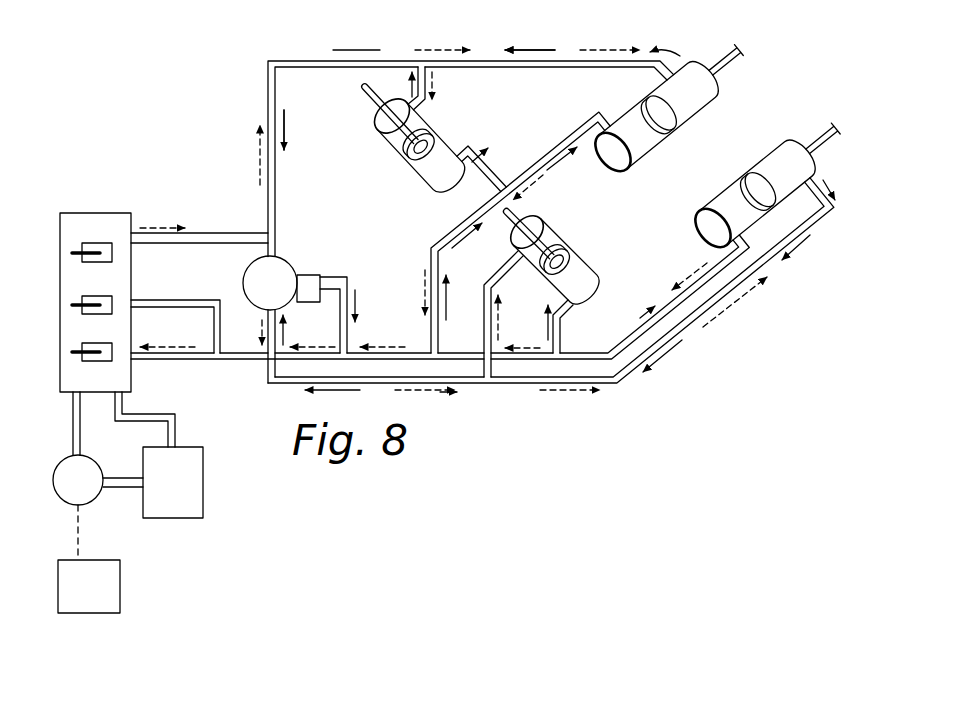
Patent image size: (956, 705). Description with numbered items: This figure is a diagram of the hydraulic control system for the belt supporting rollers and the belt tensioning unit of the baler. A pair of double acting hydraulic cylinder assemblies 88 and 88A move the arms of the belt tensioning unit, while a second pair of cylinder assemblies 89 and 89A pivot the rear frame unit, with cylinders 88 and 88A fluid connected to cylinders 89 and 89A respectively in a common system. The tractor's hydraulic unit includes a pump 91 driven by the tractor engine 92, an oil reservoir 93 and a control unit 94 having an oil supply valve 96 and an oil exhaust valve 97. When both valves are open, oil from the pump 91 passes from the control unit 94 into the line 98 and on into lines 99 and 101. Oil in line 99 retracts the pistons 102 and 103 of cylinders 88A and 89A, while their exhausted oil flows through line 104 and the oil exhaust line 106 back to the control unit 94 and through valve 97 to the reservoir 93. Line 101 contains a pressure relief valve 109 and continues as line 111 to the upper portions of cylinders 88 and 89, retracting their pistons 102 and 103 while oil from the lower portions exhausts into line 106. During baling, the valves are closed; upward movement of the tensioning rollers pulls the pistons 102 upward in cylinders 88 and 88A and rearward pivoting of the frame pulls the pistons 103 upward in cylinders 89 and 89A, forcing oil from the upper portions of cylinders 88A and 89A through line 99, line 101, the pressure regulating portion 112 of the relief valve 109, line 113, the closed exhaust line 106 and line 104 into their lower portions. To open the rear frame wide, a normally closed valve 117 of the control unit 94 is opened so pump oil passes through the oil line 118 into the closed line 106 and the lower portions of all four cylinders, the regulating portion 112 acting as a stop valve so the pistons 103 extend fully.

The hydraulic cylinder assembly 88 is at (728, 200).
The hydraulic cylinder assembly 88A is at (698, 102).
The hydraulic cylinder assembly 89 is at (556, 241).
The hydraulic cylinder assembly 89A is at (422, 130).
The pump 91 is at (82, 497).
The tractor engine 92 is at (80, 600).
The oil reservoir 93 is at (178, 510).
The control unit 94 is at (140, 270).
The oil supply control valve 96 is at (75, 254).
The oil exhaust control valve 97 is at (90, 358).
The line 98 is at (222, 245).
The line 99 is at (583, 60).
The line 101 is at (276, 250).
The piston 102 is at (662, 125).
The piston 103 is at (412, 160).
The line 104 is at (430, 250).
The oil exhaust line 106 is at (240, 362).
The pressure relief valve 109 is at (286, 271).
The line 111 is at (623, 380).
The pressure regulating portion 112 is at (320, 278).
The line 113 is at (347, 335).
The normally closed valve 117 is at (80, 302).
The oil line 118 is at (170, 302).